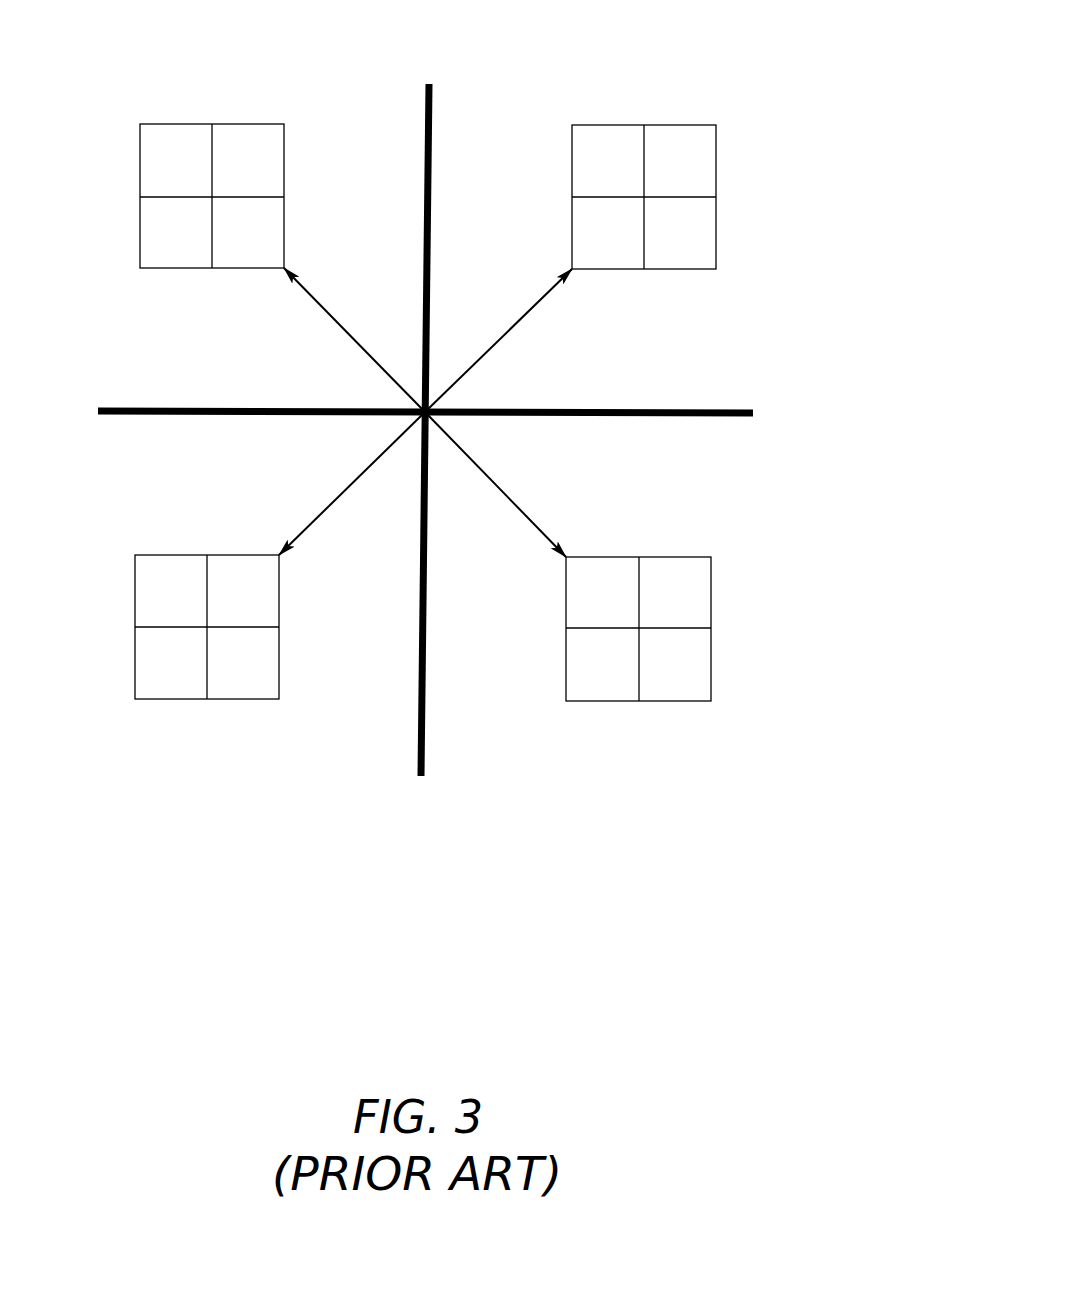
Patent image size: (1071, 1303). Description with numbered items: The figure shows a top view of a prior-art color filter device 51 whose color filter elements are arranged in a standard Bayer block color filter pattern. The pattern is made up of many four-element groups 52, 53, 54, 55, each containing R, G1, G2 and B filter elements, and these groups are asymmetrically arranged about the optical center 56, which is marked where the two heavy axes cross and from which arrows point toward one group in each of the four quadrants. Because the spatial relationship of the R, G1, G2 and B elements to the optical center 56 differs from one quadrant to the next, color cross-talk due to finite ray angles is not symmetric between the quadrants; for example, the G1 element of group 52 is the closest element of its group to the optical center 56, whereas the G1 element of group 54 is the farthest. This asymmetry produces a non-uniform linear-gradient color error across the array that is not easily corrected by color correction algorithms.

The prior art image sensor color filter pattern (kernel layout) 51 is at (755, 52).
The four-element group 52 is at (716, 197).
The four-element group 53 is at (140, 197).
The four-element group 54 is at (135, 627).
The four-element group 55 is at (711, 628).
The optical center 56 is at (431, 406).